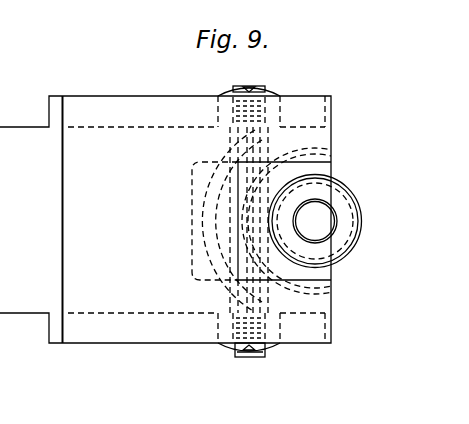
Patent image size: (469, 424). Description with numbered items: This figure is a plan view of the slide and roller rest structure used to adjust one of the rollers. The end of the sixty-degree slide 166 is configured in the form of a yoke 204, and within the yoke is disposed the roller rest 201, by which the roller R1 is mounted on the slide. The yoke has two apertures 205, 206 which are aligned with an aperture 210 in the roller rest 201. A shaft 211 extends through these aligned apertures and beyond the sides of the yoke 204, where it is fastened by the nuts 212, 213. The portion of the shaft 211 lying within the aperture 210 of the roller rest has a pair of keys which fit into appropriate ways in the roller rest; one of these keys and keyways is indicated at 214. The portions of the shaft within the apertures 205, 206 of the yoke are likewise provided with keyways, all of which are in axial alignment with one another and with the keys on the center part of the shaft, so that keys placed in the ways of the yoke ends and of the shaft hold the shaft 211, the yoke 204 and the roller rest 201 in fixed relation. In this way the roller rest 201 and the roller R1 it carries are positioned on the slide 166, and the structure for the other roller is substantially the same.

The 60° slide 166 is at (77, 144).
The yoke 204 is at (231, 178).
The nut 213 is at (234, 92).
The shaft 211 is at (249, 87).
The aperture 206 is at (270, 138).
The aperture 210 is at (336, 149).
The roller rest 201 is at (334, 171).
The roller R1 is at (216, 248).
The key and keyway 214 is at (232, 258).
The aperture 205 is at (268, 299).
The nut 212 is at (272, 351).